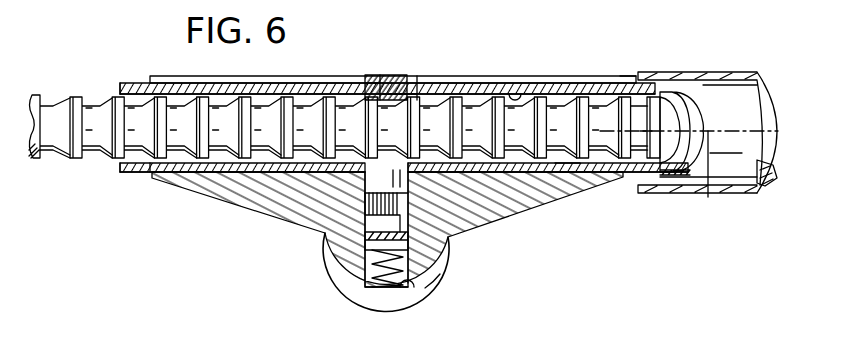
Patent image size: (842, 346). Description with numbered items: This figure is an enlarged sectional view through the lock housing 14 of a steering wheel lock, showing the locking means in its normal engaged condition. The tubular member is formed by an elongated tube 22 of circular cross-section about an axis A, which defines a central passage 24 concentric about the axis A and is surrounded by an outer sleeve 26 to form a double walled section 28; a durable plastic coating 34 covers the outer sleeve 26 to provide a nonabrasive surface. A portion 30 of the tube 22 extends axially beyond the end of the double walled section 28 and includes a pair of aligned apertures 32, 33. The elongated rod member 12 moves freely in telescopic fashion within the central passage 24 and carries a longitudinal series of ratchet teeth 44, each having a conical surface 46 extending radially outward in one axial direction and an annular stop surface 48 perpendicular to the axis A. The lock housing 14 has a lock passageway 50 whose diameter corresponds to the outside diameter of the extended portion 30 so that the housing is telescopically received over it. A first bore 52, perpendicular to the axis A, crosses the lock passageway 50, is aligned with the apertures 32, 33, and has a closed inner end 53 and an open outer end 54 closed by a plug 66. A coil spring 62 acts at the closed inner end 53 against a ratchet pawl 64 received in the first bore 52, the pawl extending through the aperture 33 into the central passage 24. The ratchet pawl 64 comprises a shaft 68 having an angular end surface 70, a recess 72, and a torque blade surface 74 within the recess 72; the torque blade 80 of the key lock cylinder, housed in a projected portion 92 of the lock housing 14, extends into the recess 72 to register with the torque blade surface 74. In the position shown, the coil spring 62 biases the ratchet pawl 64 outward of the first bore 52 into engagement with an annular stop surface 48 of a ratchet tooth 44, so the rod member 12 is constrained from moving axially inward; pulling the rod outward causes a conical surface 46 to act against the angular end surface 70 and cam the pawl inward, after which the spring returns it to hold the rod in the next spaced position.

The elongated rod member 12 is at (73, 160).
The lock housing 14 is at (563, 70).
The elongated tube 22 is at (140, 172).
The central passage 24 is at (565, 175).
The outer sleeve 26 is at (632, 77).
The double walled section 28 is at (677, 195).
The extended portion of the tube 30 is at (213, 76).
The aperture 32 is at (403, 88).
The aperture 33 is at (365, 182).
The durable plastic coating 34 is at (715, 72).
The ratchet teeth 44 is at (70, 95).
The conical surface 46 is at (400, 113).
The annular stop surface 48 is at (380, 76).
The lock passageway 50 is at (527, 88).
The first bore 52 is at (368, 293).
The closed inner end 53 is at (412, 283).
The open outer end 54 is at (370, 78).
The coil spring 62 is at (388, 285).
The ratchet pawl 64 is at (365, 210).
The plug 66 is at (390, 80).
The shaft 68 is at (451, 236).
The angular end surface 70 is at (408, 182).
The recess 72 is at (440, 250).
The torque blade surface 74 is at (343, 232).
The torque blade 80 is at (380, 218).
The projected portion 92 is at (435, 283).
The axis A is at (708, 140).